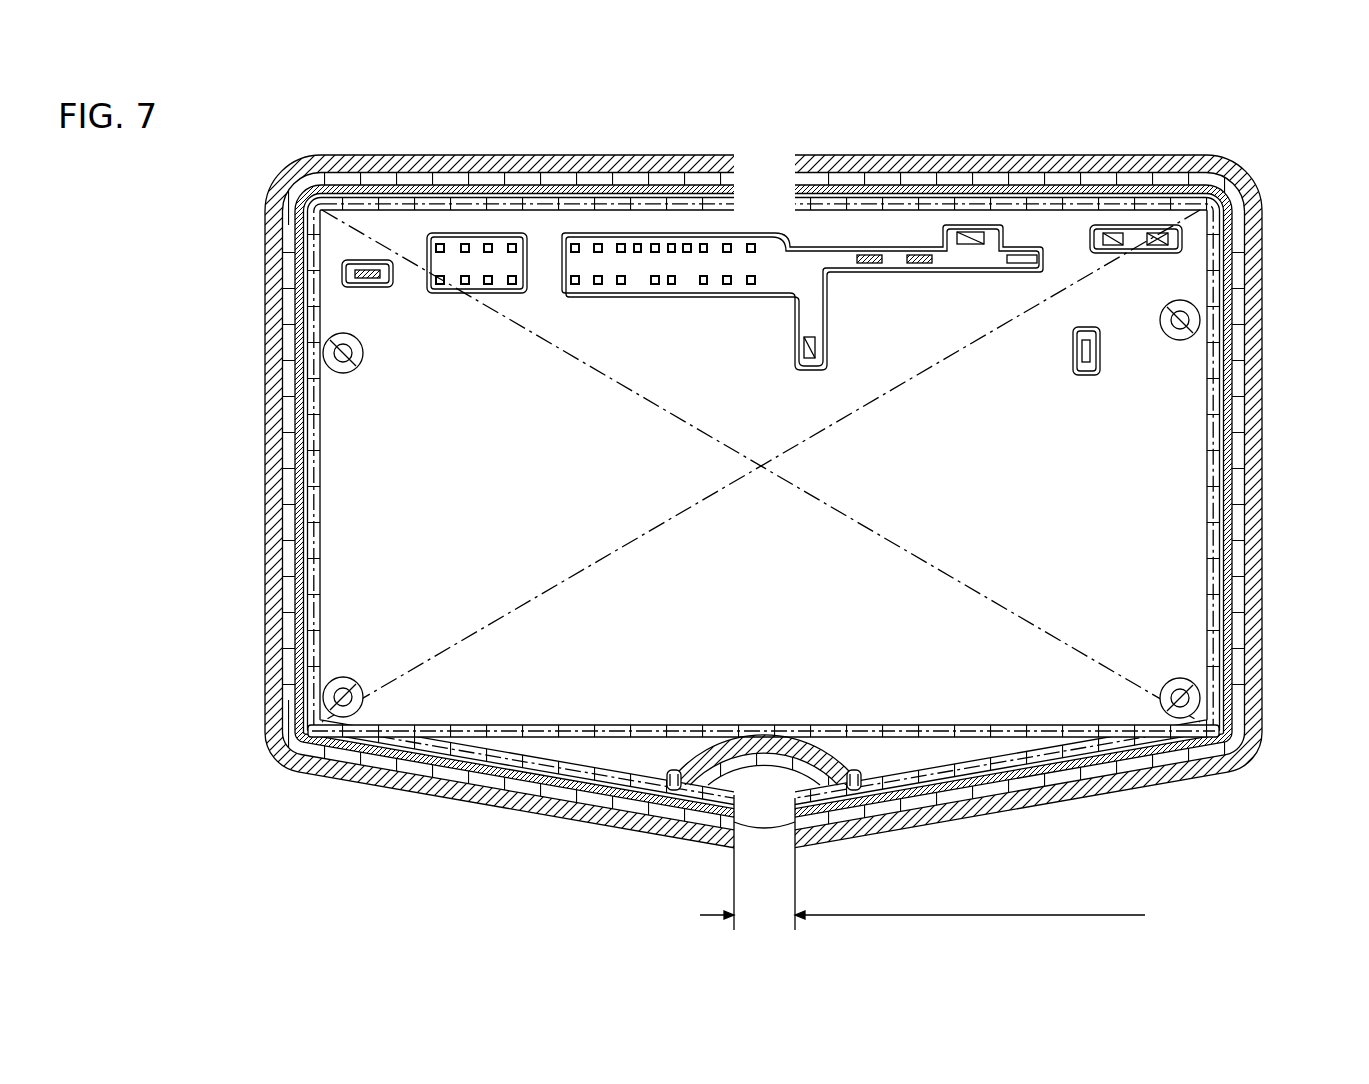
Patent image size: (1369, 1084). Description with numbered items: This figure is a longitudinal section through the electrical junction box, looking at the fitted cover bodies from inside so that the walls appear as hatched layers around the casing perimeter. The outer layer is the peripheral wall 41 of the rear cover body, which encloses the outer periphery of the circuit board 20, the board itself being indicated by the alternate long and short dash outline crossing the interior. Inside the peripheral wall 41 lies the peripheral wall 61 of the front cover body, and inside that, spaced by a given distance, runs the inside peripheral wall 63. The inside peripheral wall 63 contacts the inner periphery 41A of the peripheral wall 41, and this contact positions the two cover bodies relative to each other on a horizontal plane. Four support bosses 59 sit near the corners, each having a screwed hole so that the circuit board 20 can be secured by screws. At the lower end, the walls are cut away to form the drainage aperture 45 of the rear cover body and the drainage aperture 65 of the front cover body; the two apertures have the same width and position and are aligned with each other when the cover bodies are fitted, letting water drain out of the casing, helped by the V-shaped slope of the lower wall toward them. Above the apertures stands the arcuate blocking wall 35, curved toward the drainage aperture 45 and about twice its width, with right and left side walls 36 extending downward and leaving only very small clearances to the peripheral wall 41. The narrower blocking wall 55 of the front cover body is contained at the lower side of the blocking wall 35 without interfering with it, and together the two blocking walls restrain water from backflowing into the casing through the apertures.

The circuit board 20 is at (1062, 292).
The peripheral wall 41 is at (772, 168).
The inner periphery 41A is at (855, 215).
The peripheral wall 61 is at (588, 180).
The inside peripheral wall 63 is at (672, 215).
The support boss 59 is at (358, 368).
The blocking wall 35 is at (714, 737).
The blocking wall 55 is at (810, 738).
The side wall 36 is at (668, 762).
The drainage aperture 45 is at (922, 862).
The drainage aperture 65 is at (930, 868).